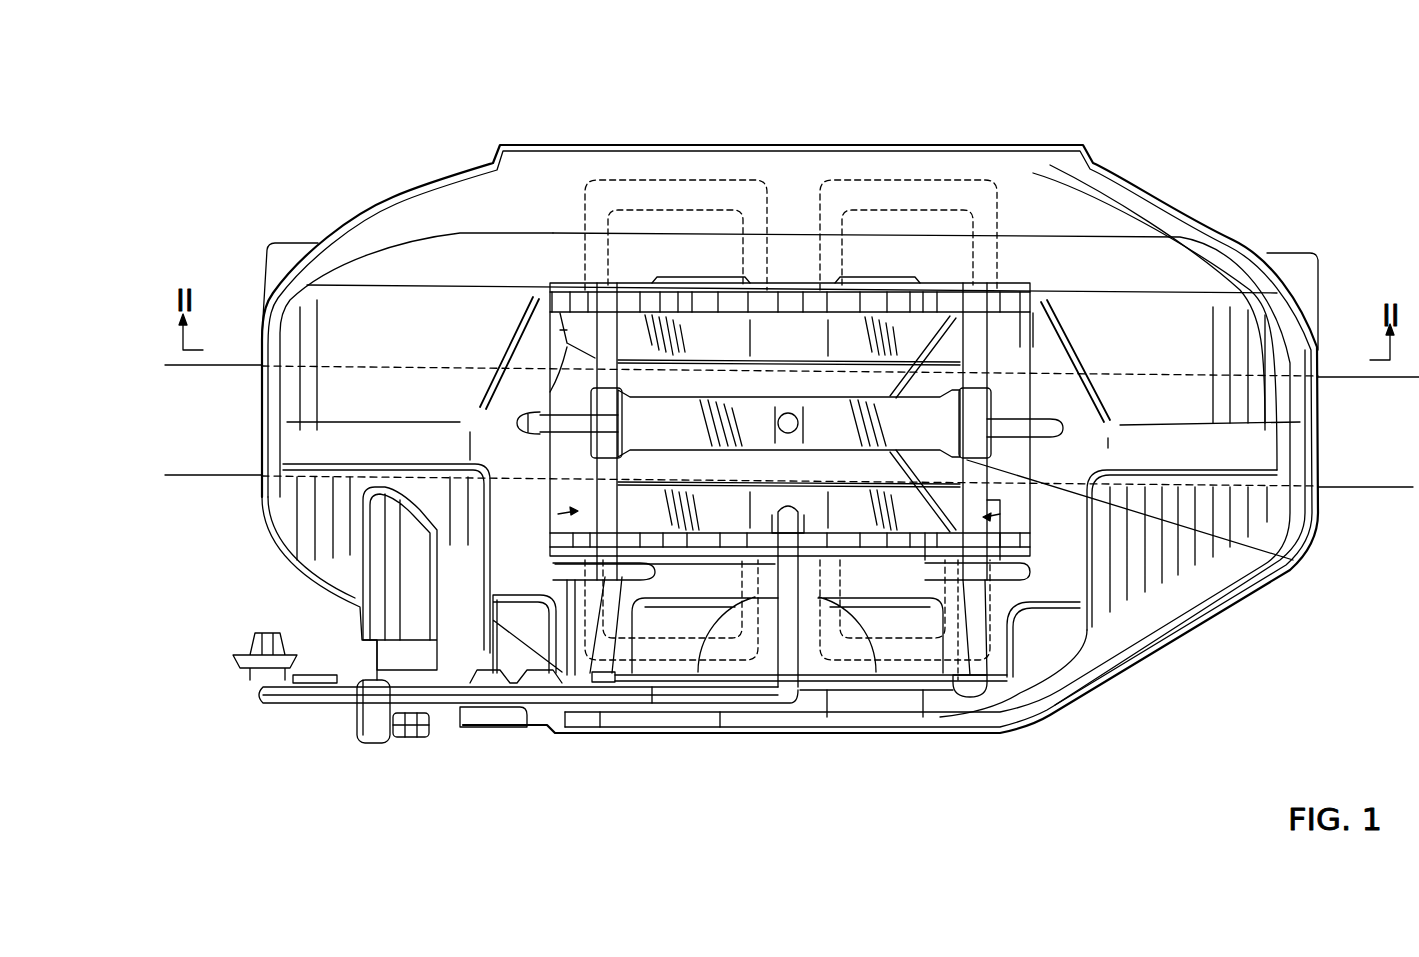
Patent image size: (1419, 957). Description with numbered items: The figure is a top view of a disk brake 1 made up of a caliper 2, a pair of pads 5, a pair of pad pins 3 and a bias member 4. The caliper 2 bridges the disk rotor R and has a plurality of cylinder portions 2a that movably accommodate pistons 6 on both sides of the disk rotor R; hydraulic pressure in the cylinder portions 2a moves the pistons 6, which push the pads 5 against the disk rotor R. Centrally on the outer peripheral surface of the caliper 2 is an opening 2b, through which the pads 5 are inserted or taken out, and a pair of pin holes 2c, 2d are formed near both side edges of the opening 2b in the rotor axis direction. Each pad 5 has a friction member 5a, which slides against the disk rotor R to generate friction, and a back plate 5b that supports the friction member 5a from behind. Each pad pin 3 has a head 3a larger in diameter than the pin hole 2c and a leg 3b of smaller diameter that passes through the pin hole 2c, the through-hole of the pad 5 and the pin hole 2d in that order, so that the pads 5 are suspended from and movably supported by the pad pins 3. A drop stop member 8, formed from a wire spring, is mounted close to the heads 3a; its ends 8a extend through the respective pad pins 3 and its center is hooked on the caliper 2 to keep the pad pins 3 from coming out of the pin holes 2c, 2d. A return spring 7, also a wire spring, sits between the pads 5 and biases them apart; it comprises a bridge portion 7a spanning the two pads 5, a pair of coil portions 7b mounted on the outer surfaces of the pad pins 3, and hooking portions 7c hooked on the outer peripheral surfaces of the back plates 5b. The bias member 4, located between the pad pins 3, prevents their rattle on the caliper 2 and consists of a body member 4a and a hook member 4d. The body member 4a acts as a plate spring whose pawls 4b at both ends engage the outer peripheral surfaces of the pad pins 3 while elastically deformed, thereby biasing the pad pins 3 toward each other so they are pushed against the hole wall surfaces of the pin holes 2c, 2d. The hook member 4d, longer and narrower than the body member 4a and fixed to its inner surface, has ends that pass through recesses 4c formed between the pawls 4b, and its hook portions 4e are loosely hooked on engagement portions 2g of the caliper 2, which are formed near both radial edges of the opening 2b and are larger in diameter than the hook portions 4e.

The disk brake 1 is at (338, 190).
The caliper 2 is at (328, 238).
The cylinder portions 2a is at (838, 180).
The opening 2b is at (605, 333).
The pin hole 2c is at (1000, 605).
The pin hole 2d is at (578, 265).
The engagement portions 2g is at (557, 413).
The pad pins 3 is at (975, 470).
The head 3a is at (970, 697).
The leg 3b is at (605, 330).
The bias member 4 is at (967, 455).
The body member 4a is at (980, 490).
The pawls 4b is at (560, 395).
The recesses 4c is at (370, 577).
The hook member 4d is at (380, 537).
The hook portions 4e is at (560, 457).
The pads 5 is at (675, 85).
The friction member 5a is at (688, 347).
The back plate 5b is at (760, 305).
The pistons 6 is at (865, 190).
The return spring 7 is at (990, 300).
The bridge portion 7a is at (933, 365).
The coil portions 7b is at (978, 330).
The hooking portions 7c is at (952, 320).
The drop stop member 8 is at (910, 681).
The ends 8a is at (1007, 681).
The disk rotor R is at (1365, 488).